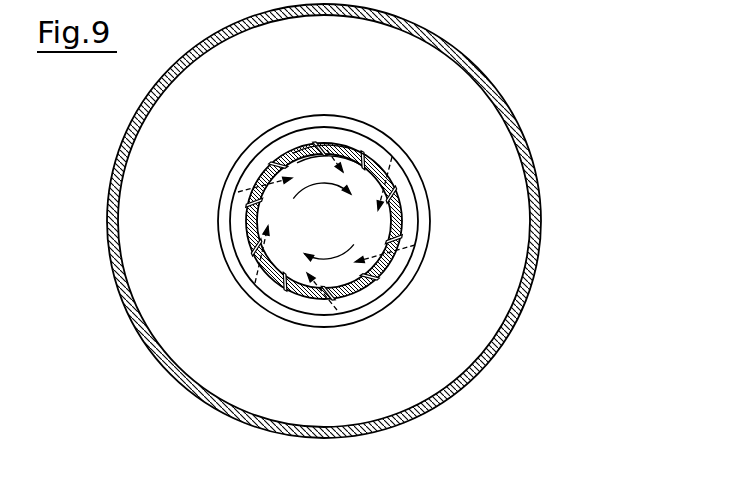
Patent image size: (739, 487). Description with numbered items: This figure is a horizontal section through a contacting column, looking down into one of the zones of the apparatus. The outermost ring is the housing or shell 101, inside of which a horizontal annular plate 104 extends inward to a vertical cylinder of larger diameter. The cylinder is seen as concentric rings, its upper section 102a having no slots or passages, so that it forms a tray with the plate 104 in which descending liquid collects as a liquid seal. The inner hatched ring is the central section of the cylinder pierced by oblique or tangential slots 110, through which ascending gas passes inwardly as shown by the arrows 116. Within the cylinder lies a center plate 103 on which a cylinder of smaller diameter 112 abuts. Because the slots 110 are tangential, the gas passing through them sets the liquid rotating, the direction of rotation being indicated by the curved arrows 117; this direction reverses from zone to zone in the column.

The housing or shell 101 is at (491, 86).
The horizontal annular plates 104 is at (497, 184).
The upper section of cylinder 102a is at (413, 172).
The oblique or tangential slots 110 is at (395, 220).
The cylinders with smaller diameters 112 is at (343, 146).
The arrows 116 is at (264, 249).
The arrows 117 is at (320, 183).
The center plates 103 is at (338, 271).